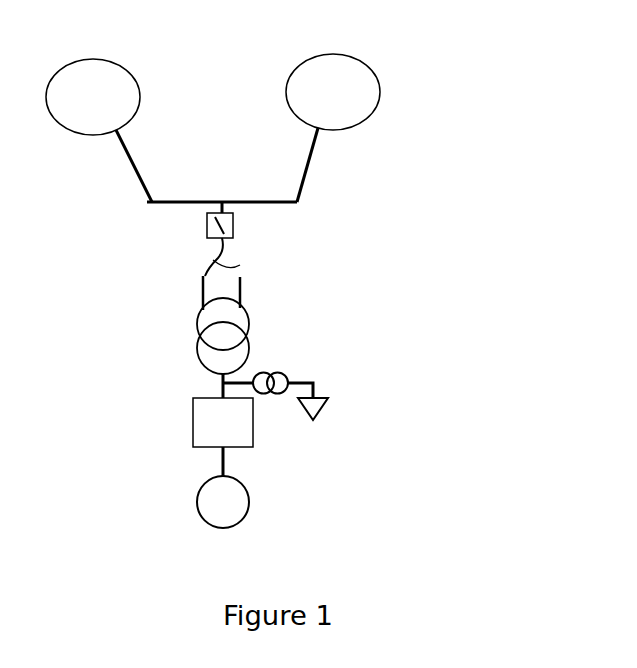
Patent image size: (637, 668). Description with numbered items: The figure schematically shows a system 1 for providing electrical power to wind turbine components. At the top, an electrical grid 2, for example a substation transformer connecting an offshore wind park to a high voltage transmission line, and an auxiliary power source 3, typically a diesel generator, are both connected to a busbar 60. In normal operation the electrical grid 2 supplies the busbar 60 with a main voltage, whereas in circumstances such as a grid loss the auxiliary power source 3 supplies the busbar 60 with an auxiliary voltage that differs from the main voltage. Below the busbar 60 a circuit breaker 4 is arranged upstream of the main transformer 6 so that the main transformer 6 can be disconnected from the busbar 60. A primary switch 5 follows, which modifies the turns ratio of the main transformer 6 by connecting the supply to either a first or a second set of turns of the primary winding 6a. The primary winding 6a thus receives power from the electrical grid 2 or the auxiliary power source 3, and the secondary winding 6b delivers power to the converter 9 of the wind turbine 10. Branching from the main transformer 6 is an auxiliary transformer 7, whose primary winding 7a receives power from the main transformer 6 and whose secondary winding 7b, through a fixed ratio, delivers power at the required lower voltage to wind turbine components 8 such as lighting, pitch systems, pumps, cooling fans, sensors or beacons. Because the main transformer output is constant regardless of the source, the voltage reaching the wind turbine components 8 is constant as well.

The system 1 is at (304, 190).
The electrical grid 2 is at (105, 60).
The auxiliary power source 3 is at (373, 73).
The circuit breaker 4 is at (207, 222).
The primary switch 5 is at (205, 262).
The main transformer 6 is at (193, 345).
The primary winding 6a is at (253, 307).
The secondary winding 6b is at (207, 377).
The auxiliary transformer 7 is at (309, 399).
The primary winding 7a is at (257, 365).
The secondary winding 7b is at (280, 398).
The wind turbine components 8 is at (323, 417).
The converter 9 is at (218, 430).
The wind turbine 10 is at (210, 517).
The busbar 60 is at (195, 200).